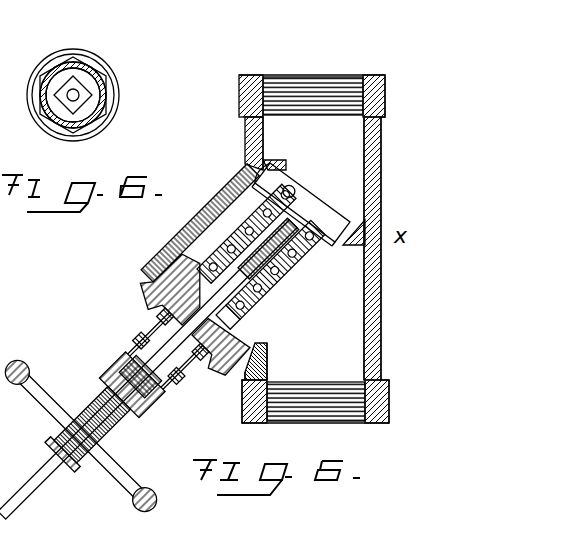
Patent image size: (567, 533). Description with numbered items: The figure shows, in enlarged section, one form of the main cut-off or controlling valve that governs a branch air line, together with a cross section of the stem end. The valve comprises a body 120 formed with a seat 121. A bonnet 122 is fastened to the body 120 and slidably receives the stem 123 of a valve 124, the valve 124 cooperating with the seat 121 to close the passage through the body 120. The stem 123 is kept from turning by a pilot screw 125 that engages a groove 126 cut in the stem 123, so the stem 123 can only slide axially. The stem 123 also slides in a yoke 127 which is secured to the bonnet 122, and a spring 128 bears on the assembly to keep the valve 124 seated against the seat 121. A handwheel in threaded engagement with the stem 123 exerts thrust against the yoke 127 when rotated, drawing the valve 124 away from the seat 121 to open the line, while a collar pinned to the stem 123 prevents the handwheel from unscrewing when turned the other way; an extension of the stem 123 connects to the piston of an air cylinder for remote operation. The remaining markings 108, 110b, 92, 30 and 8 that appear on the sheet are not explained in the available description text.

In FIG. 6, the valve stem end / square drive 108 is at (82, 83).
In FIG. 5, the threaded pipe connection 110b is at (328, 58).
In FIG. 5, the body 120 is at (314, 249).
In FIG. 5, the seat 121 is at (277, 168).
In FIG. 5, the bonnet 122 is at (173, 285).
In FIG. 5, the stem 123 is at (217, 300).
In FIG. 5, the valve 124 is at (350, 172).
In FIG. 5, the pilot screw 125 is at (268, 272).
In FIG. 5, the groove 126 is at (272, 234).
In FIG. 5, the yoke 127 is at (113, 380).
In FIG. 5, the spring 128 is at (262, 203).
In FIG. 5, the handle 92 is at (35, 345).
In FIG. 5, the collar 30 is at (52, 441).
In FIG. 5, the stem 8 is at (28, 487).